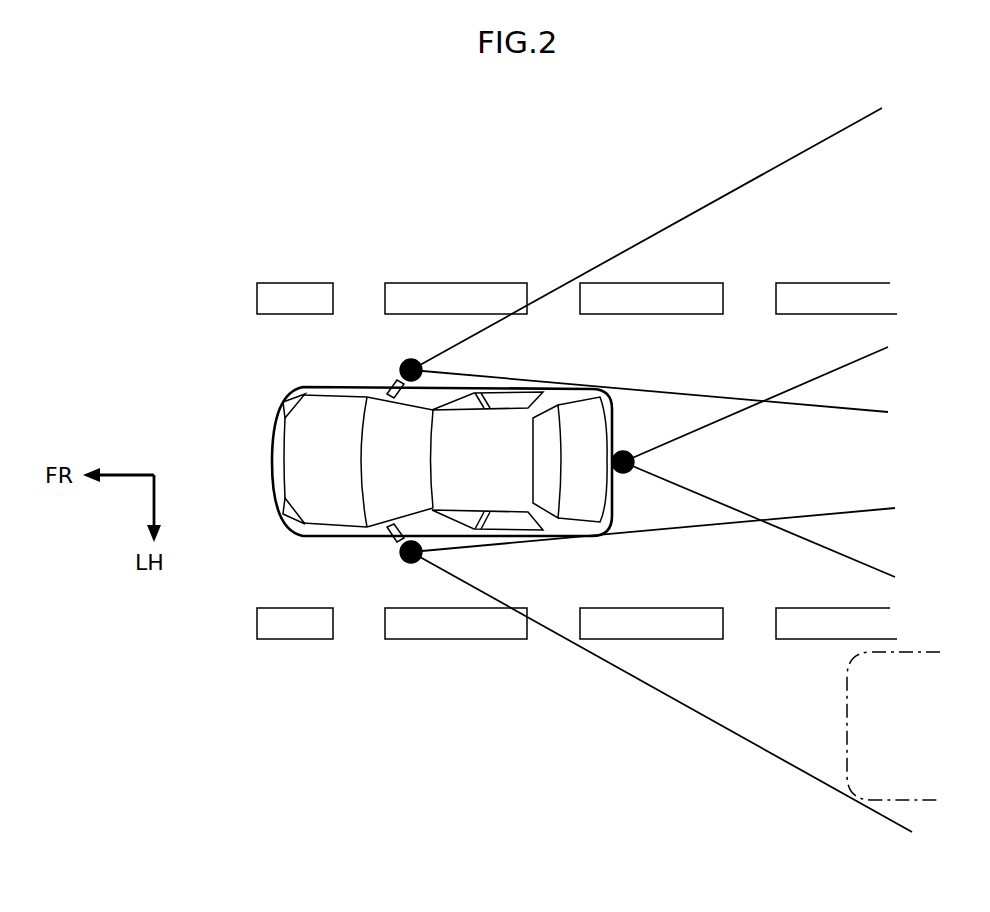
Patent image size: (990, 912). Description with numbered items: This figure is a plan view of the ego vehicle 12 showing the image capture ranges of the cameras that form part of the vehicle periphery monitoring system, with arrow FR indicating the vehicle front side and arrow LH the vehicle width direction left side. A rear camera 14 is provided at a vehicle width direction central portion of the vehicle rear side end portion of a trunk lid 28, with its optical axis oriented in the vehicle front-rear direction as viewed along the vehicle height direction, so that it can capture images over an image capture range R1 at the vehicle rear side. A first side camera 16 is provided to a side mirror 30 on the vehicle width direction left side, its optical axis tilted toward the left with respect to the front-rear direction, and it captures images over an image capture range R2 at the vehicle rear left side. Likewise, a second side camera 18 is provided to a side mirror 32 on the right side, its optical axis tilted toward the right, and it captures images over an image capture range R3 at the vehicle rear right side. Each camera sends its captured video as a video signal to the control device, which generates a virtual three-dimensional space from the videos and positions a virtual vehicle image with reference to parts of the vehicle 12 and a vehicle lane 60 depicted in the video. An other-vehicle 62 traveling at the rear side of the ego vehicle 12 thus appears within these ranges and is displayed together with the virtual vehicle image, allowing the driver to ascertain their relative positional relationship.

The vehicle 12 is at (290, 394).
The rear camera 14 is at (632, 451).
The first side camera 16 is at (412, 564).
The second side camera 18 is at (404, 362).
The trunk lid 28 is at (614, 437).
The side mirror 30 is at (392, 541).
The side mirror 32 is at (390, 383).
The vehicle lane 60 is at (836, 298).
The other-vehicle 62 is at (928, 650).
The image capture range R1 is at (710, 427).
The image capture range R2 is at (692, 705).
The image capture range R3 is at (712, 204).